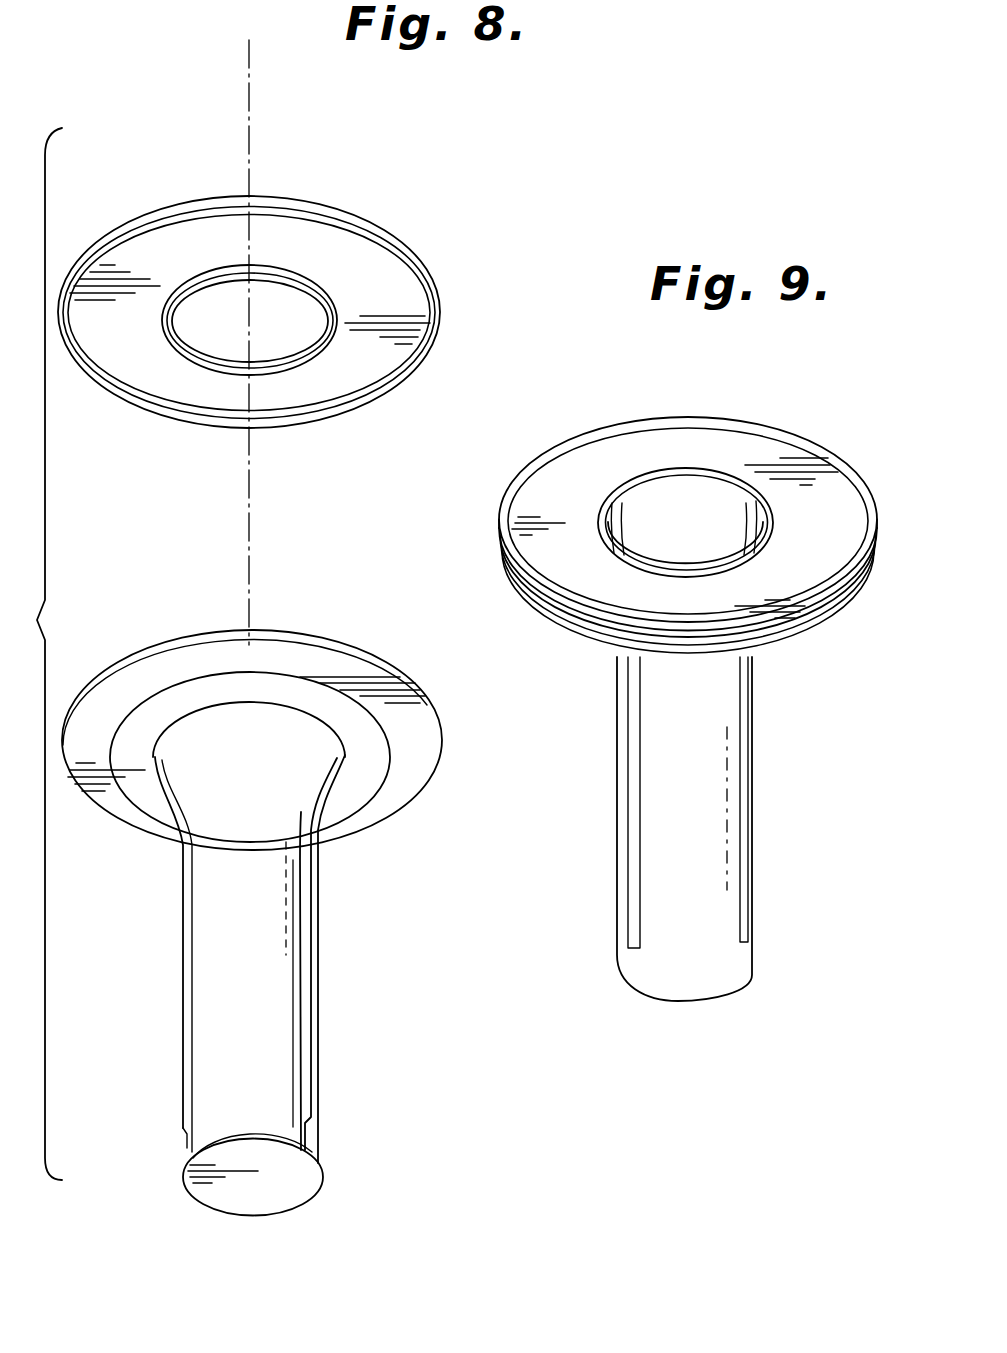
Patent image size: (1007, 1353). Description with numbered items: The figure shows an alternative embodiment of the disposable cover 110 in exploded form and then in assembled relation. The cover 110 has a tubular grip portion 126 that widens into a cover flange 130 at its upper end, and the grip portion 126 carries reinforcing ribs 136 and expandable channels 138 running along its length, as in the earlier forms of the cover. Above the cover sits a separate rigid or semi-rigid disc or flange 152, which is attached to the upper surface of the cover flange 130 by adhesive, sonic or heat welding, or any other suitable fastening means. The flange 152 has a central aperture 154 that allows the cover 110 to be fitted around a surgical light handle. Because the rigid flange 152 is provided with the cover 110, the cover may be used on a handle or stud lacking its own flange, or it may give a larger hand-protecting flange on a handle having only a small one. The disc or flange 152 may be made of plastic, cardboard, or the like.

In FIG. 8, the disposable cover 110 is at (279, 681).
In FIG. 9, the disposable cover 110 is at (631, 727).
In FIG. 8, the grip portion 126 is at (227, 1103).
In FIG. 9, the grip portion 126 is at (687, 975).
In FIG. 8, the cover flange 130 is at (178, 645).
In FIG. 9, the cover flange 130 is at (807, 633).
In FIG. 8, the reinforcing ribs 136 is at (187, 961).
In FIG. 9, the reinforcing ribs 136 is at (752, 913).
In FIG. 8, the expandable channels 138 is at (312, 947).
In FIG. 9, the expandable channels 138 is at (632, 692).
In FIG. 8, the rigid or semi-rigid flange 152 is at (162, 268).
In FIG. 9, the rigid or semi-rigid flange 152 is at (542, 512).
In FIG. 8, the aperture 154 is at (290, 292).
In FIG. 9, the aperture 154 is at (700, 474).